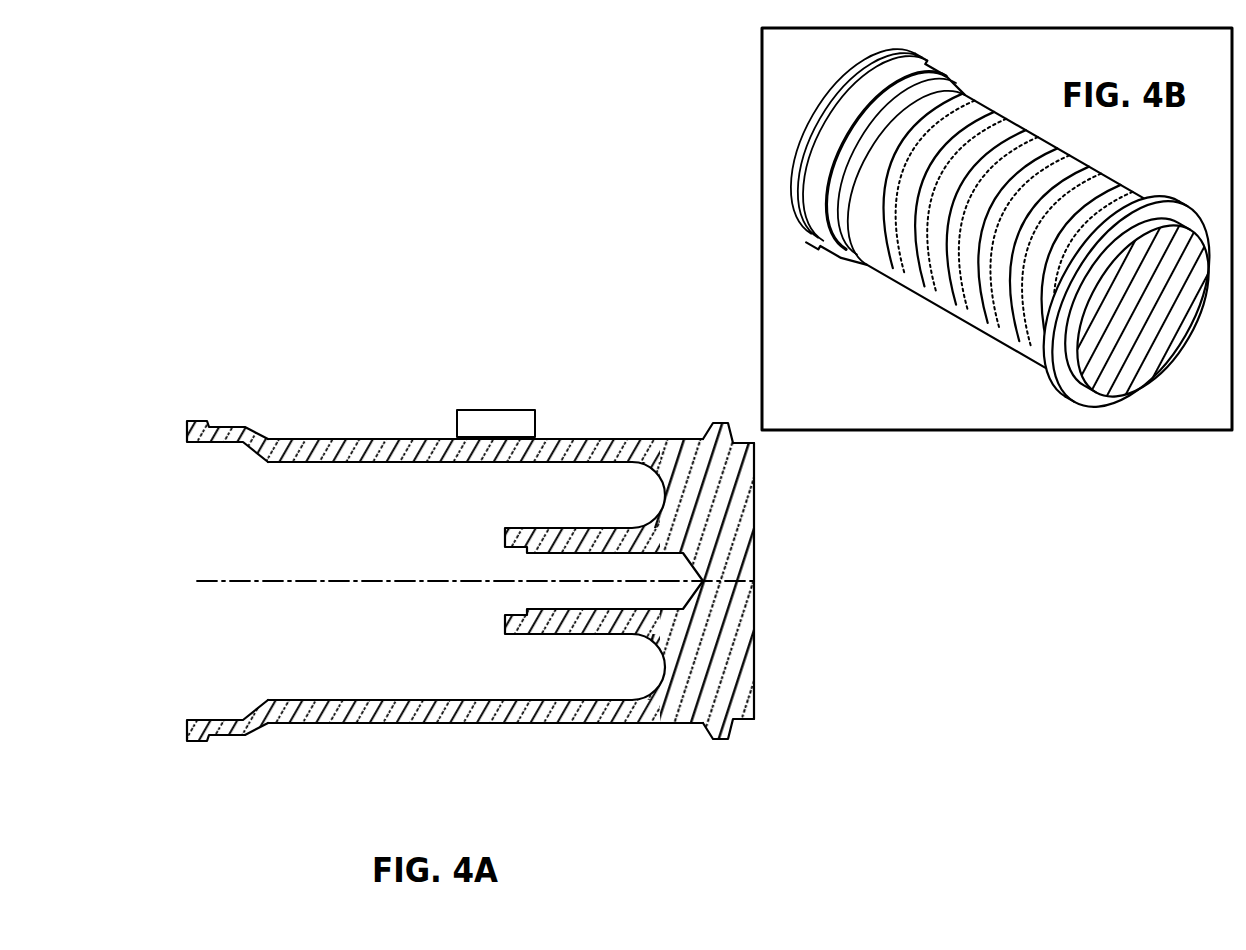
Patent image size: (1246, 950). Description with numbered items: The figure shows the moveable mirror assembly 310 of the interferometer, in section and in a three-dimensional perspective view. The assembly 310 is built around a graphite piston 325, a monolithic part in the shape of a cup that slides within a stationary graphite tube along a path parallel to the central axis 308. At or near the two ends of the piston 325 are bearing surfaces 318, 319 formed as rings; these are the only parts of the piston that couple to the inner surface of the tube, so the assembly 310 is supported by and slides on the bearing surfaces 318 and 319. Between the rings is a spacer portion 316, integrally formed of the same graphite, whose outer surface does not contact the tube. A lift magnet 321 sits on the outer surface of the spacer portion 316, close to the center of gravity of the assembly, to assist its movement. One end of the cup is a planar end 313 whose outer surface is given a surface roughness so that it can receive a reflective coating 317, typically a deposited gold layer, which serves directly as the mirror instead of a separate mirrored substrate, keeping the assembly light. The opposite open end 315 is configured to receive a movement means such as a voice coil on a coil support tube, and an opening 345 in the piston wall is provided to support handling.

In FIG. 4A, the central axis 308 is at (400, 576).
In FIG. 4A, the moveable mirror assembly 310 is at (360, 222).
In FIG. 4B, the moveable mirror assembly 310 is at (1001, 229).
In FIG. 4A, the planar end 313 is at (762, 693).
In FIG. 4A, the open end 315 is at (183, 723).
In FIG. 4A, the spacer portion 316 is at (580, 436).
In FIG. 4B, the spacer portion 316 is at (953, 222).
In FIG. 4A, the reflective coating 317 is at (762, 630).
In FIG. 4B, the reflective coating 317 is at (1115, 316).
In FIG. 4A, the bearing surface 318 is at (720, 419).
In FIG. 4B, the bearing surface 318 is at (1160, 194).
In FIG. 4A, the bearing surface 319 is at (197, 417).
In FIG. 4B, the bearing surface 319 is at (856, 63).
In FIG. 4A, the lift magnet 321 is at (491, 405).
In FIG. 4A, the graphite piston 325 is at (657, 724).
In FIG. 4A, the opening 345 is at (509, 597).